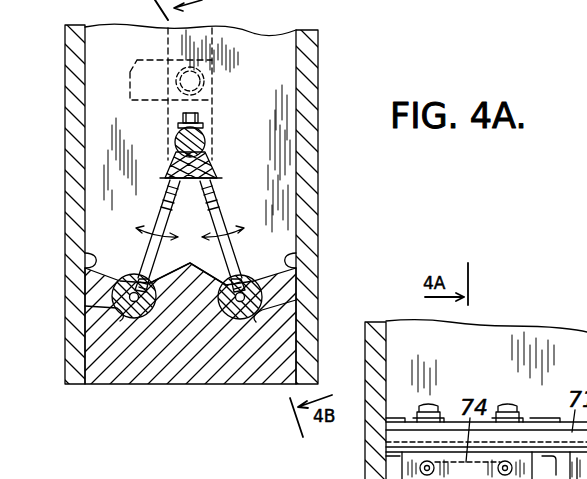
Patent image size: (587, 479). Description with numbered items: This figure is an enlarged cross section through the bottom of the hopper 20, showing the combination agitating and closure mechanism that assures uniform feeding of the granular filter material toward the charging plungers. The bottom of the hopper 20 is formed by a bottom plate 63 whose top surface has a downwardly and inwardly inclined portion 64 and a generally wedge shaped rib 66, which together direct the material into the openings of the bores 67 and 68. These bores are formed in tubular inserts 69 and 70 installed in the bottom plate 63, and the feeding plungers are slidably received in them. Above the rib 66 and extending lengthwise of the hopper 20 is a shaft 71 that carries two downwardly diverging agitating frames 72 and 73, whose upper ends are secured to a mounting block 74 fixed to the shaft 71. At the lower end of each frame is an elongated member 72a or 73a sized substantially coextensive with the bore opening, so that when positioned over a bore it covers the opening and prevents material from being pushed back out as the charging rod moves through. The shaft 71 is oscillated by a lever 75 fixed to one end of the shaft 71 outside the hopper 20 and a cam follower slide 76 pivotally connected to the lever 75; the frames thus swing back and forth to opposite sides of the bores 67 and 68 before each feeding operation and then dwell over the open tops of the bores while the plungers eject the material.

The hopper 20 is at (330, 73).
The bottom plate 63 is at (150, 396).
The downwardly and inwardly inclined portion 64 is at (86, 262).
The wedge shaped rib 66 is at (203, 276).
The bore 67 is at (130, 296).
The bore 68 is at (246, 297).
The tubular insert 69 is at (117, 308).
The tubular insert 70 is at (250, 308).
The shaft 71 is at (203, 142).
The agitating frame 72 is at (166, 200).
The elongated member 72a is at (146, 281).
The agitating frame 73 is at (214, 200).
The elongated member 73a is at (238, 281).
The mounting block 74 is at (212, 162).
The lever 75 is at (210, 30).
The cam follower slide 76 is at (140, 72).